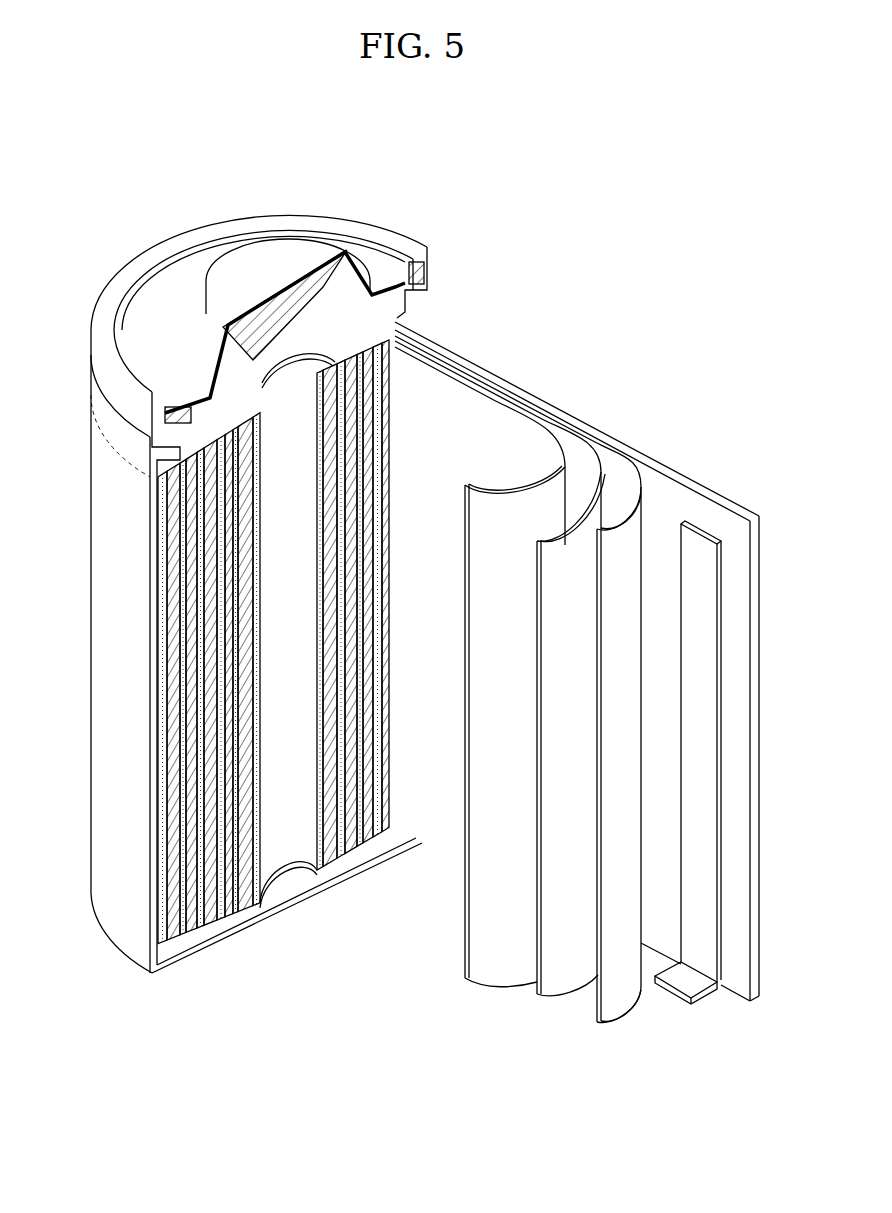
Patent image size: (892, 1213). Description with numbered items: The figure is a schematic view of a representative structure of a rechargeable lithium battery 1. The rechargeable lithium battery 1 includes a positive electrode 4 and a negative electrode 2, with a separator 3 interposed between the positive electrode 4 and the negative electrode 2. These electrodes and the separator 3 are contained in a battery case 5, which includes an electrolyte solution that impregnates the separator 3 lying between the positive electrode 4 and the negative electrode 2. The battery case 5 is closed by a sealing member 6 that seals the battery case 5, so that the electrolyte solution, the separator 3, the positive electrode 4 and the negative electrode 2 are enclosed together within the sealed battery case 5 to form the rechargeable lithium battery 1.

The rechargeable lithium battery 1 is at (660, 284).
The negative electrode 2 is at (713, 493).
The separator 3 is at (560, 446).
The positive electrode 4 is at (594, 480).
The battery case 5 is at (100, 658).
The sealing member 6 is at (262, 250).